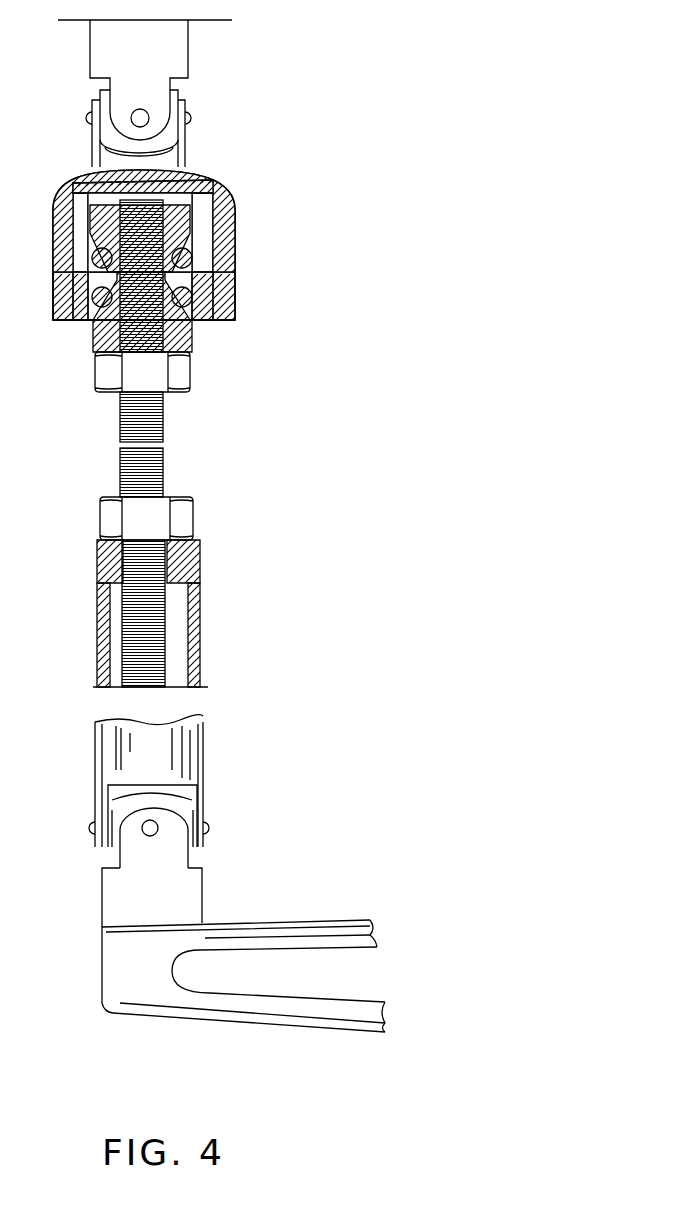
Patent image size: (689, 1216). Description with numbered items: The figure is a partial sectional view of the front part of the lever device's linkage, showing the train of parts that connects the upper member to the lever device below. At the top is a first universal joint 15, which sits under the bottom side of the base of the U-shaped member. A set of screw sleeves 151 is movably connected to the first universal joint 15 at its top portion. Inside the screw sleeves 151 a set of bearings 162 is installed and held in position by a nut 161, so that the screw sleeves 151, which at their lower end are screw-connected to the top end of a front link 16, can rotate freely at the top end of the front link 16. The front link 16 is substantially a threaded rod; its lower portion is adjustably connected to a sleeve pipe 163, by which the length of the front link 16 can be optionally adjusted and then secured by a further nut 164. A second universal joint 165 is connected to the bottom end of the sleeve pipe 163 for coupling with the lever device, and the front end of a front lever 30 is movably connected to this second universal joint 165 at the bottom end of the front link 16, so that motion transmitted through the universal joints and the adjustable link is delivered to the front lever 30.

The first universal joint 15 is at (178, 49).
The screw sleeves 151 is at (237, 265).
The bearings 162 is at (237, 245).
The front link 16 is at (164, 427).
The nut 161 is at (178, 377).
The nut 164 is at (187, 523).
The sleeve pipe 163 is at (200, 650).
The second universal joint 165 is at (188, 890).
The front lever 30 is at (333, 927).